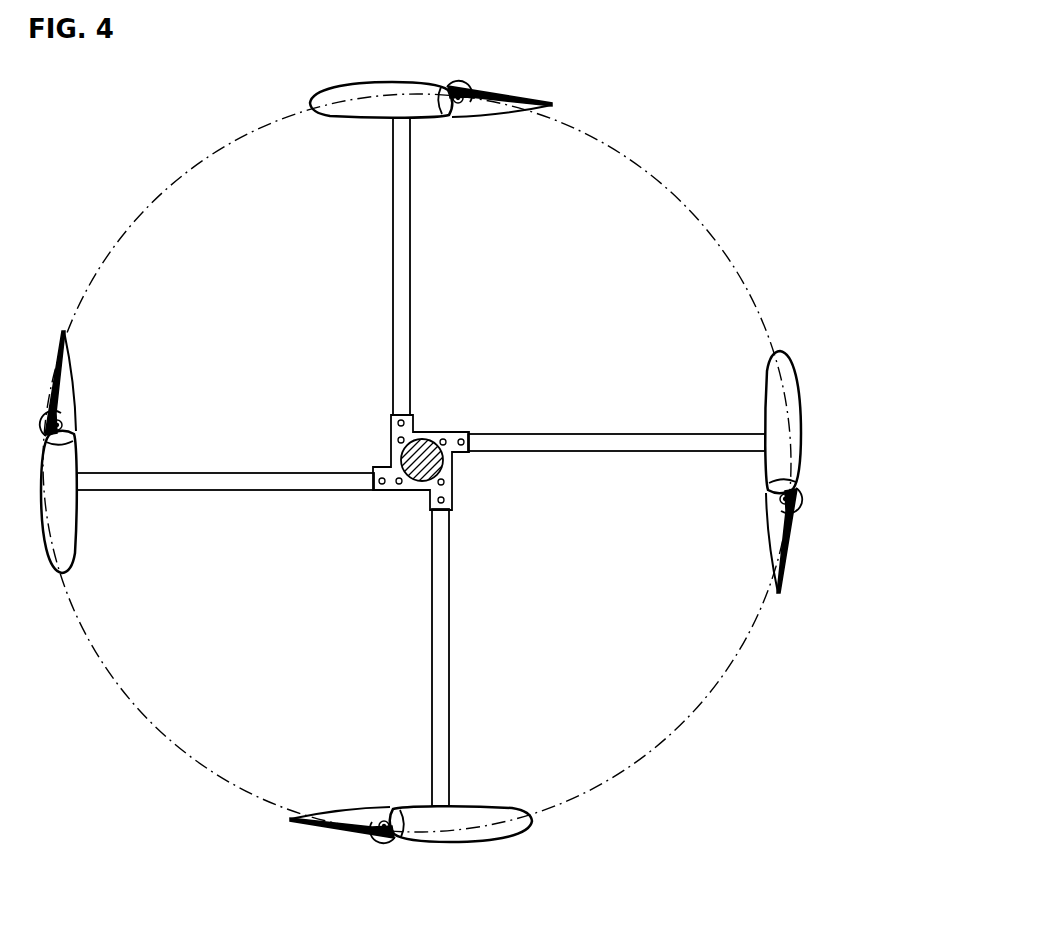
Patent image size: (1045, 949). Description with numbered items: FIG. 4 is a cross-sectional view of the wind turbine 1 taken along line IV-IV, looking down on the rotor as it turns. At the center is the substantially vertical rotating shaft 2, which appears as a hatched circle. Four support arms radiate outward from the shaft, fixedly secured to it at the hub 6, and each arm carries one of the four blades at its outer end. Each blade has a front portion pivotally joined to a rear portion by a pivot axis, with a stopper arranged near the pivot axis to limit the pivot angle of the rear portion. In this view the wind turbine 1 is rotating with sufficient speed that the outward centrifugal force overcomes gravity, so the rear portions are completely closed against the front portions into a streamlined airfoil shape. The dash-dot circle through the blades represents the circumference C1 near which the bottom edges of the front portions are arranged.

The wind turbine 1 is at (668, 112).
The rotating shaft 2 is at (440, 468).
The hub 6 is at (395, 492).
The circumference C1 is at (145, 715).